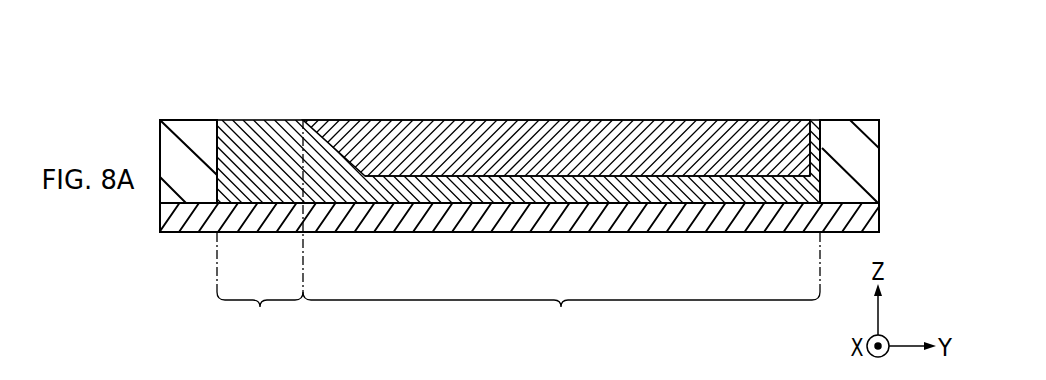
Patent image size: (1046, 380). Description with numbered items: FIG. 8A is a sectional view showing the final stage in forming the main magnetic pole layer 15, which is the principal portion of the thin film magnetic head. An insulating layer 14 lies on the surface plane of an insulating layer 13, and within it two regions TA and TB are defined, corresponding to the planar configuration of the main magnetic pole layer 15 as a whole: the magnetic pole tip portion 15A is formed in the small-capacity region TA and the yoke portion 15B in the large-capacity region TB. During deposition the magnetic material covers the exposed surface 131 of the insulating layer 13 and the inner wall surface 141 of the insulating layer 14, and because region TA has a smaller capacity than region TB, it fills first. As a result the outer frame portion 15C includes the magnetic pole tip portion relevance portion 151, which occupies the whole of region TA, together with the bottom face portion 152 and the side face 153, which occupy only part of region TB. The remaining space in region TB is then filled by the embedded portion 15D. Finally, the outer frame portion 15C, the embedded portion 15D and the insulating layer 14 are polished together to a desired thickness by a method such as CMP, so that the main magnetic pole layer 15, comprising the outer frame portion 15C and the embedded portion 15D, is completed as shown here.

The insulating layer 13 is at (879, 216).
The insulating layer 14 is at (879, 147).
The main magnetic pole layer 15 is at (515, 112).
The magnetic pole tip portion 15A is at (260, 317).
The yoke portion 15B is at (561, 317).
The outer frame portion 15C is at (265, 120).
The embedded portion 15D is at (451, 120).
The surface of the insulating layer 131 is at (520, 194).
The inner wall surface 141 is at (224, 125).
The magnetic pole tip portion relevance portion 151 is at (257, 200).
The bottom face portion 152 is at (543, 200).
The side face 153 is at (338, 200).